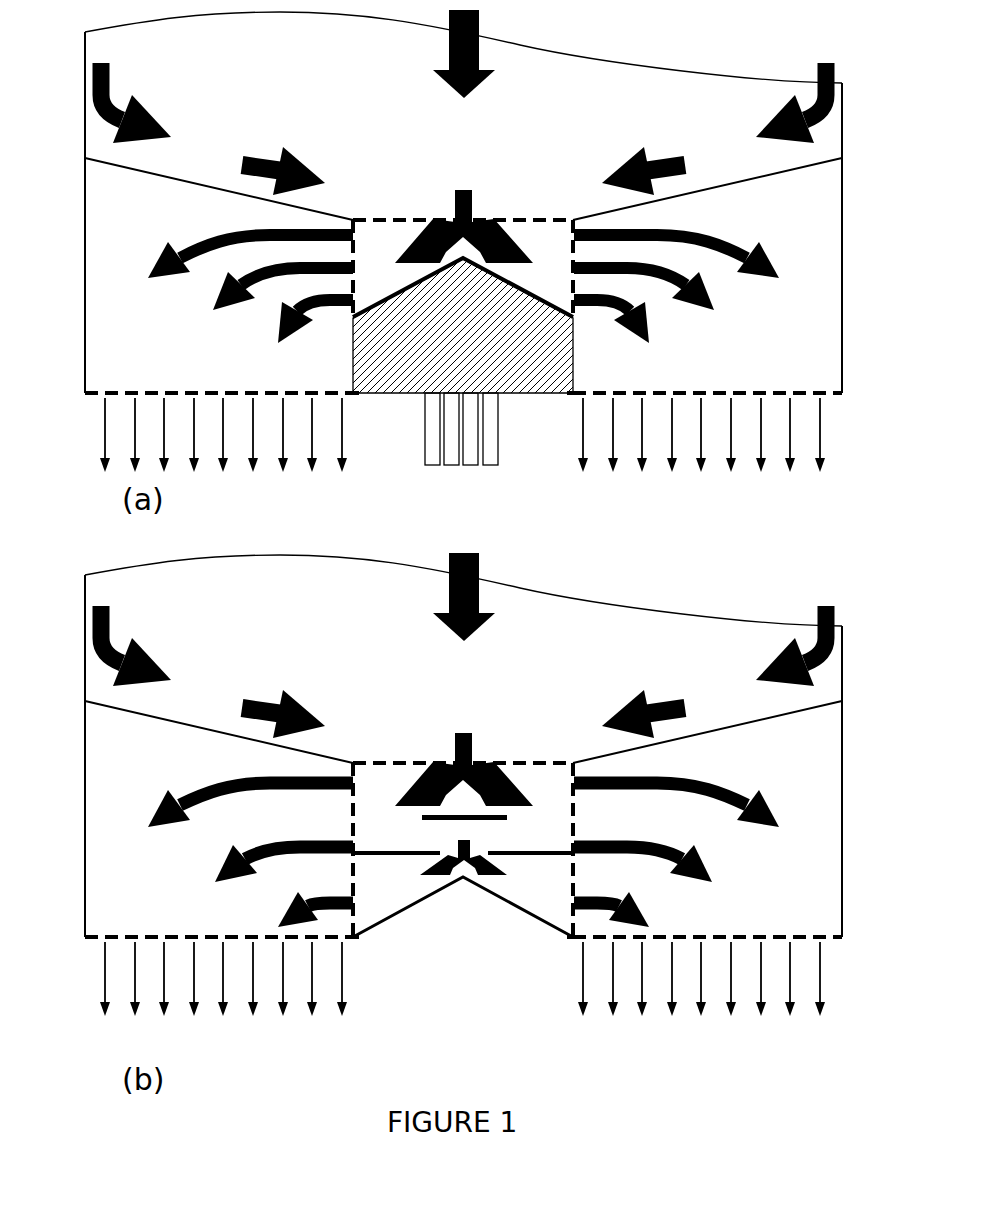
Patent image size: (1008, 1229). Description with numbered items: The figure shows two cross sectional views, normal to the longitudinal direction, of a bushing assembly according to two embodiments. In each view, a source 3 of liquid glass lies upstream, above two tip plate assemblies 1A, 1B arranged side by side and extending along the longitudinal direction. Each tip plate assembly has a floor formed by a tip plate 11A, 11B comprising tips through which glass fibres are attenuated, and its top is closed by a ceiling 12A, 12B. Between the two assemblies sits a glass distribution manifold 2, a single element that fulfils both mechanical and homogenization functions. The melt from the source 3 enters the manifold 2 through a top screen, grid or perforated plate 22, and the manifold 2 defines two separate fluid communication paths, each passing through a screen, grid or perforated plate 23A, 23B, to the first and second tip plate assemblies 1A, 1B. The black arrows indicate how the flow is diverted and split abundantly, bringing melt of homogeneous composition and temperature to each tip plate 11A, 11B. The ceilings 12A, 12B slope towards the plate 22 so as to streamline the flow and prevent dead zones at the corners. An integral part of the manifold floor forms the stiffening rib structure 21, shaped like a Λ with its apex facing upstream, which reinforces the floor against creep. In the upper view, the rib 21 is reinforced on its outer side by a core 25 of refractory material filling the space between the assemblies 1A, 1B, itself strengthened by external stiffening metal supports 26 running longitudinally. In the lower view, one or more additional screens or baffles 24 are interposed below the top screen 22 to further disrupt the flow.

The source of liquid glass 3 is at (597, 85).
The first tip plate assembly 1A is at (83, 262).
The second tip plate assembly 1B is at (844, 262).
The ceiling 12A is at (100, 160).
The ceiling 12B is at (828, 160).
The glass distribution manifold 2 is at (403, 228).
The screen, grid or perforated plate 23A is at (357, 240).
The screen, grid or perforated plate 23B is at (573, 240).
The screen, grid or perforated plate 22 is at (492, 222).
The stiffening rib structure 21 is at (518, 287).
The core 25 is at (548, 370).
The external stiffening metal supports 26 is at (425, 440).
The tip plate 11A is at (357, 398).
The tip plate 11B is at (570, 398).
The additional screens or baffles 24 is at (385, 855).